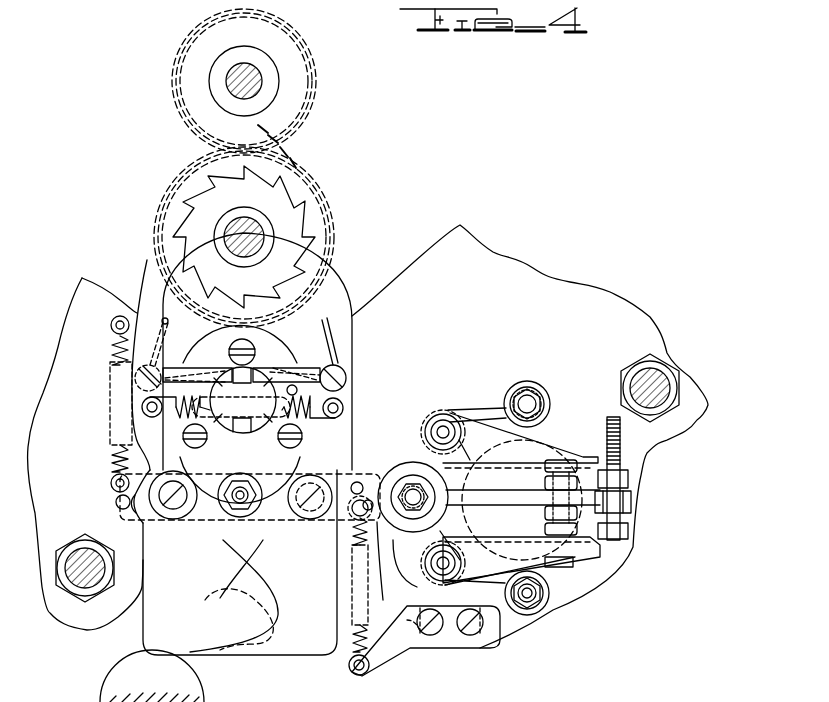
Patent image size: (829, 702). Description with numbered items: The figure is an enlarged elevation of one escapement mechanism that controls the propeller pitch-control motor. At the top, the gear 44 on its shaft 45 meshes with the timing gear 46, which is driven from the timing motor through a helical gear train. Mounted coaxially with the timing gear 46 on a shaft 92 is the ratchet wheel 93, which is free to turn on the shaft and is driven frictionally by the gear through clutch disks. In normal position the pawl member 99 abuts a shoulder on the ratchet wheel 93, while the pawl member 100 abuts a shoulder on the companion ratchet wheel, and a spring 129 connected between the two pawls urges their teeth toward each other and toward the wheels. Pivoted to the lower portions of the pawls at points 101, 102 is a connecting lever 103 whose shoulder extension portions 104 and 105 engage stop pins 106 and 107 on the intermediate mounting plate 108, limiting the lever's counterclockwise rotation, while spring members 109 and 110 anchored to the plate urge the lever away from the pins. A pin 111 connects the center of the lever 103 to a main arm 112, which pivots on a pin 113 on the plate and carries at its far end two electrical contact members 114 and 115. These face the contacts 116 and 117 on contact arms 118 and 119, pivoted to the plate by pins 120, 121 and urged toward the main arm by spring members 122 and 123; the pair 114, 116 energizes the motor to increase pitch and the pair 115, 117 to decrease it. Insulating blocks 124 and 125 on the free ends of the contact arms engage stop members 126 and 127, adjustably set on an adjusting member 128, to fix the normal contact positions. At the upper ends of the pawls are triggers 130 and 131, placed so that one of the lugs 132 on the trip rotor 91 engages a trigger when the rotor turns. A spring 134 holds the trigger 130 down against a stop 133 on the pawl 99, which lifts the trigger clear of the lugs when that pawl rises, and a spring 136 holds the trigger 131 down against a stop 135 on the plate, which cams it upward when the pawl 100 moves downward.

The gear 44 is at (300, 56).
The shaft 45 is at (255, 95).
The timing gear 46 is at (300, 180).
The ratchet wheel 93 is at (238, 201).
The shaft 92 is at (258, 245).
The pawl member 99 is at (143, 268).
The pawl member 100 is at (340, 255).
The intermediate mounting plate 108 is at (471, 295).
The spring 134 is at (163, 322).
The trigger 130 is at (162, 362).
The stop 133 is at (200, 374).
The trigger 131 is at (305, 362).
The spring 136 is at (340, 348).
The stop 135 is at (346, 390).
The spring member 109 is at (120, 397).
The trip rotor 91 is at (238, 415).
The spring 129 is at (325, 415).
The lugs 132 is at (240, 433).
The stop pin 107 is at (358, 482).
The shoulder extension portion 105 is at (368, 500).
The pin 113 is at (410, 490).
The pin 120 is at (441, 427).
The spring member 122 is at (482, 410).
The contact arm 118 is at (525, 445).
The insulating block 124 is at (597, 447).
The contact 116 is at (545, 467).
The electrical contact member 114 is at (545, 482).
The electrical contact member 115 is at (545, 514).
The contact 117 is at (545, 529).
The stop member 126 is at (628, 480).
The adjusting member 128 is at (631, 500).
The stop member 127 is at (628, 532).
The insulating block 125 is at (600, 550).
The contact arm 119 is at (560, 567).
The pin 121 is at (440, 570).
The spring member 123 is at (495, 603).
The spring member 110 is at (368, 585).
The stop pin 106 is at (116, 502).
The shoulder extension portion 104 is at (132, 503).
The pivot point 101 is at (173, 510).
The connecting lever 103 is at (205, 520).
The pin 111 is at (240, 504).
The pivot point 102 is at (305, 505).
The main arm 112 is at (322, 520).